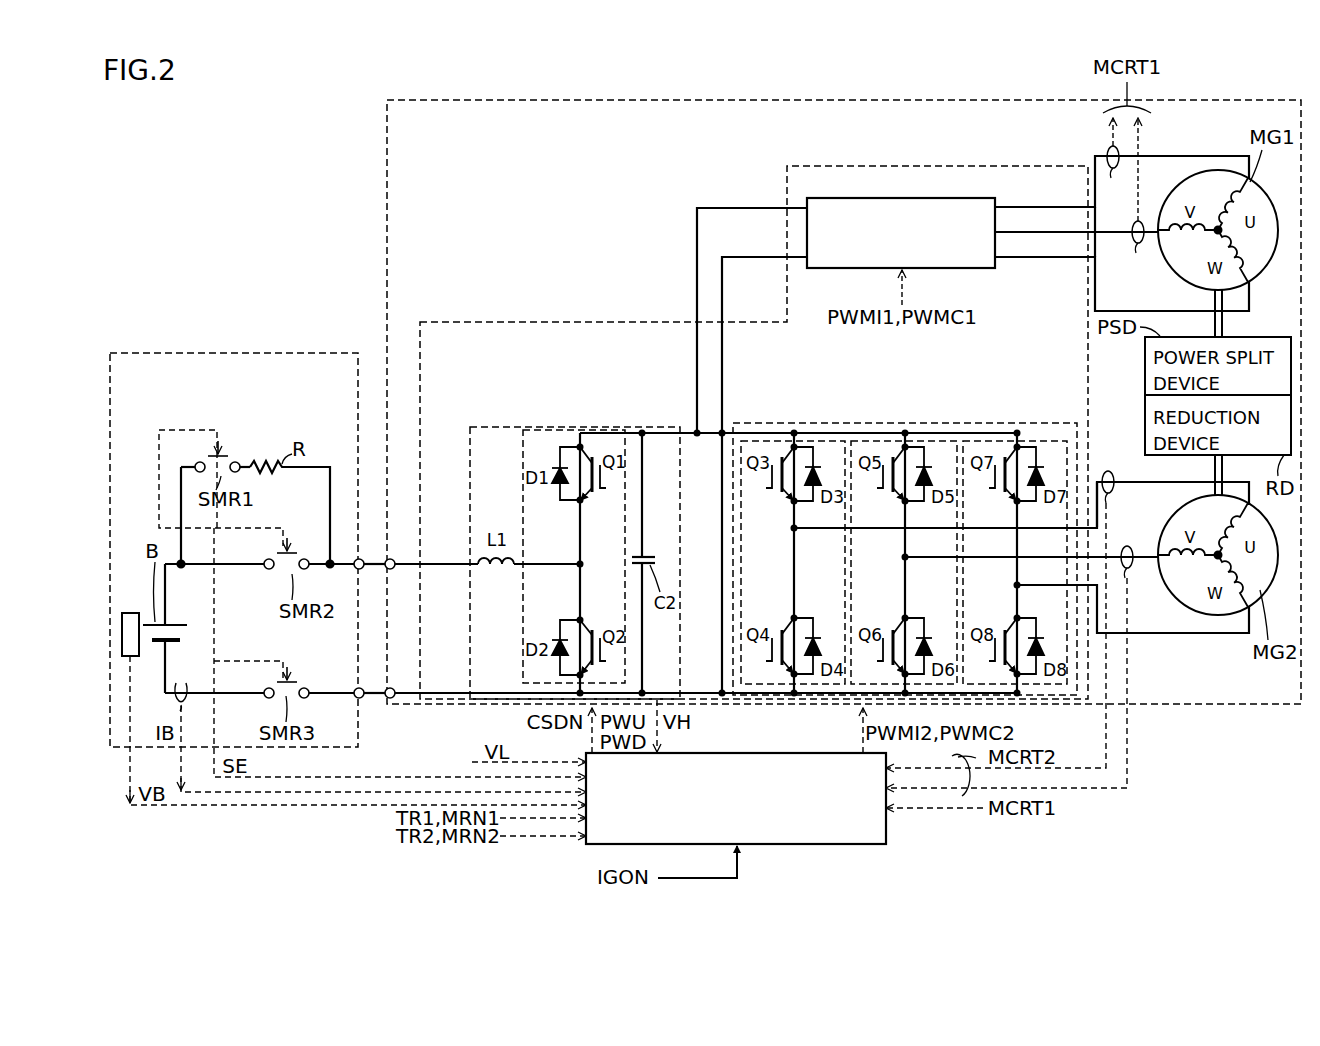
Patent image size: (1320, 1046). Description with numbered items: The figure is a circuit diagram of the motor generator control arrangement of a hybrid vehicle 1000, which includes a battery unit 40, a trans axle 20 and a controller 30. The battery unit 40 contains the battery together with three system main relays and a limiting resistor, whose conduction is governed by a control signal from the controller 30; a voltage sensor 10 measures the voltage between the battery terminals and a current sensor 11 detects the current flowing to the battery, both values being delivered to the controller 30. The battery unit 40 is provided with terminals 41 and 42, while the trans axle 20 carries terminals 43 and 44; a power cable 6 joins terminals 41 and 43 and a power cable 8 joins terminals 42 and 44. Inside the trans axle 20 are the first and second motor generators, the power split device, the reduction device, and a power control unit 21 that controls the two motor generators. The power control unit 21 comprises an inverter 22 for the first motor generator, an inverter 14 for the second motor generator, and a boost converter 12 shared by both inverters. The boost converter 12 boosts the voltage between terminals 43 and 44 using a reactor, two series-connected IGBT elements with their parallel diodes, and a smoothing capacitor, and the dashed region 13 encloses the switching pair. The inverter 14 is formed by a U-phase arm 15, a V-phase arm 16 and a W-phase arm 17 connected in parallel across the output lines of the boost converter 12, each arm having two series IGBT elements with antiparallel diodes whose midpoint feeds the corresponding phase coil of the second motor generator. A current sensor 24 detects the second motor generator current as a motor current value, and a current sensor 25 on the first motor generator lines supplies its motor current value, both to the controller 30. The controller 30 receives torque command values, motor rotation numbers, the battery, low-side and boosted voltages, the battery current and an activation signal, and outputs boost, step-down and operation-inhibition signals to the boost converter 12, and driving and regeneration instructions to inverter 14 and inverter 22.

The vehicle 1000 is at (183, 306).
The trans axle 20 is at (426, 100).
The power control unit 21 is at (787, 180).
The inverter 22 is at (960, 198).
The current sensor 25 is at (1113, 172).
The current sensor 24 is at (1108, 471).
The battery unit 40 is at (261, 352).
The voltage sensor 10 is at (130, 612).
The current sensor 11 is at (181, 682).
The terminal 41 is at (355, 558).
The terminal 42 is at (355, 688).
The terminal 43 is at (392, 558).
The terminal 44 is at (388, 688).
The power cable 6 is at (364, 570).
The power cable 8 is at (364, 702).
The boost converter 12 is at (470, 455).
The switching element pair 13 is at (523, 480).
The inverter 14 is at (760, 422).
The U-phase arm 15 is at (822, 440).
The V-phase arm 16 is at (934, 440).
The W-phase arm 17 is at (1046, 440).
The controller 30 is at (836, 845).